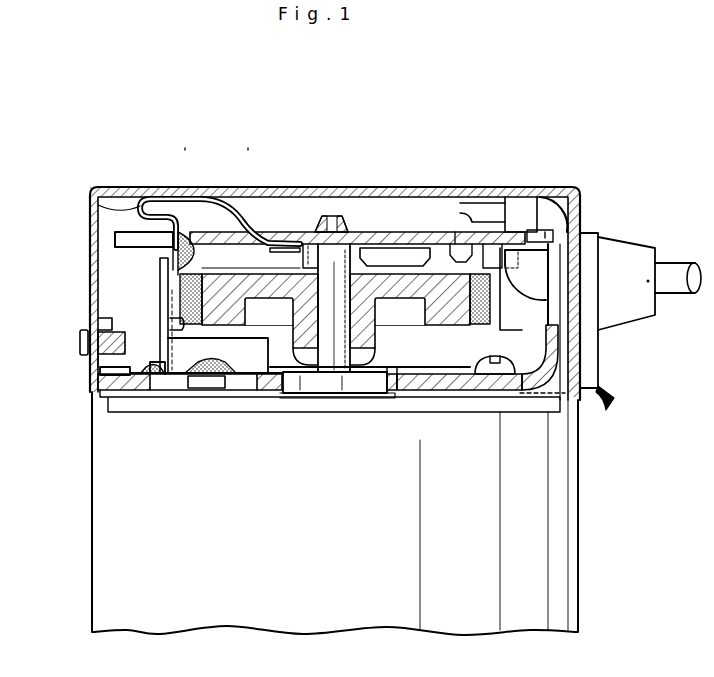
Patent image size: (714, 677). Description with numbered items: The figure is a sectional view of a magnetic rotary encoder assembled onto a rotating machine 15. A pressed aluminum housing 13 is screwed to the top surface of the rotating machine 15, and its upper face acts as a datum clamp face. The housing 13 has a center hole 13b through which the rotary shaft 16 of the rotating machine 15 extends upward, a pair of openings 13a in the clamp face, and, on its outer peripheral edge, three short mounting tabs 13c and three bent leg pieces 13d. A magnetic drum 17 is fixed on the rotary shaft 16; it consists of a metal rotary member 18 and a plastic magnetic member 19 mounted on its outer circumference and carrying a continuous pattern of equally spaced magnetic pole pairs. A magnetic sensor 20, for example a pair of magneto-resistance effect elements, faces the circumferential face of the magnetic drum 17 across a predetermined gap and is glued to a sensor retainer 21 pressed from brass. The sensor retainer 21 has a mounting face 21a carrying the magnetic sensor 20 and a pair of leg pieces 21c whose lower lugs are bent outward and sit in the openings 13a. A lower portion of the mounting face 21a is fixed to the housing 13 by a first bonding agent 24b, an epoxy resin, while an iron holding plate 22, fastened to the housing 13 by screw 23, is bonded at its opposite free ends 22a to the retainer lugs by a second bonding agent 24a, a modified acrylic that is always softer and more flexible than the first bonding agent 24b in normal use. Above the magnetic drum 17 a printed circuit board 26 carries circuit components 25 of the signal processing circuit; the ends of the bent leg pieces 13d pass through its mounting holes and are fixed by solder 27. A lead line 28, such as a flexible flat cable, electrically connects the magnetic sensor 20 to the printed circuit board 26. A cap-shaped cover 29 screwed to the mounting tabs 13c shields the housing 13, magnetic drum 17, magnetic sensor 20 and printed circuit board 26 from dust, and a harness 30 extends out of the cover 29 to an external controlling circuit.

The housing 13 is at (480, 392).
The openings 13a is at (160, 376).
The center hole 13b is at (388, 384).
The mounting tabs 13c is at (100, 322).
The bent leg pieces 13d is at (340, 255).
The rotating machine 15 is at (563, 545).
The rotary shaft 16 is at (305, 262).
The magnetic drum 17 is at (187, 148).
The rotary member 18 is at (240, 270).
The magnetic member 19 is at (192, 270).
The magnetic sensor 20 is at (165, 249).
The sensor retainer 21 is at (150, 273).
The mounting face 21a is at (175, 322).
The leg pieces 21c is at (248, 380).
The holding plate 22 is at (430, 370).
The free ends 22a is at (186, 386).
The screw 23 is at (492, 360).
The second bonding agent 24a is at (210, 388).
The first bonding agent 24b is at (112, 372).
The circuit components 25 is at (402, 258).
The printed circuit board 26 is at (488, 232).
The solder 27 is at (320, 230).
The lead line 28 is at (140, 215).
The cover 29 is at (90, 210).
The harness 30 is at (665, 296).